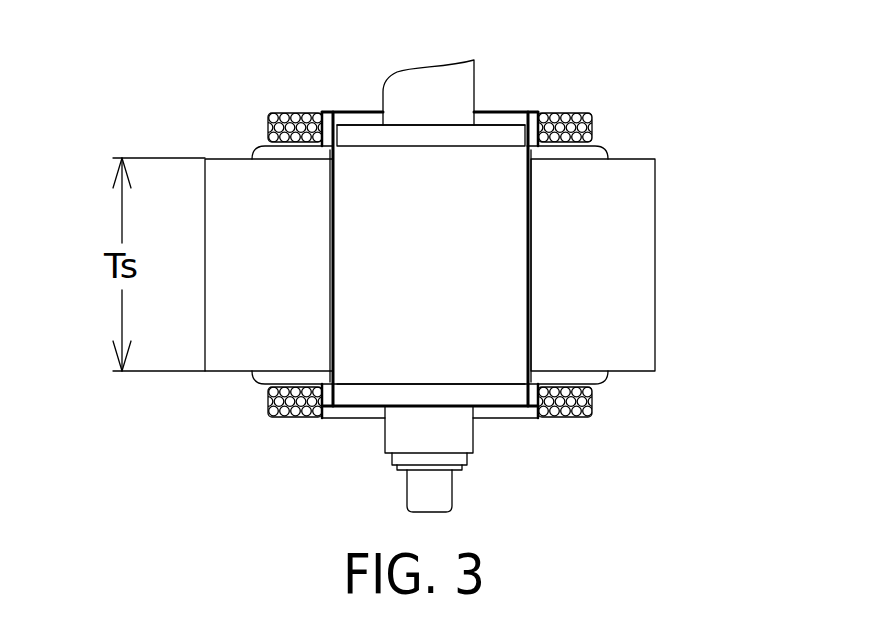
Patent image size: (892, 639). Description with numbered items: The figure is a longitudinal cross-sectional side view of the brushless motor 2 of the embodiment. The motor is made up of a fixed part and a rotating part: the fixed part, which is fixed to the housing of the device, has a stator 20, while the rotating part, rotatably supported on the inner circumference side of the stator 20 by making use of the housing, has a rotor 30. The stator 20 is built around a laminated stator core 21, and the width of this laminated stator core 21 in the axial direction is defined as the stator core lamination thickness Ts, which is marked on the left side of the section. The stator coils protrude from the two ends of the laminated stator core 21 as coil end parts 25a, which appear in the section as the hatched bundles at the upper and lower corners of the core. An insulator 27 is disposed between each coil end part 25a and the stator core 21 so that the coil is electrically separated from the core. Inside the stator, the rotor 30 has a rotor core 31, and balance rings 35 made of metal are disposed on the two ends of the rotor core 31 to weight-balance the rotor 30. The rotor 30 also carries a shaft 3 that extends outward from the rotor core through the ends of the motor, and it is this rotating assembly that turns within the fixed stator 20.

The brushless motor 2 is at (667, 342).
The shaft 3 is at (418, 97).
The stator 20 is at (652, 207).
The laminated stator core 21 is at (628, 283).
The coil end part 25a is at (592, 112).
The insulator 27 is at (597, 155).
The rotor 30 is at (485, 437).
The rotor core 31 is at (372, 365).
The balance ring 35 is at (495, 135).